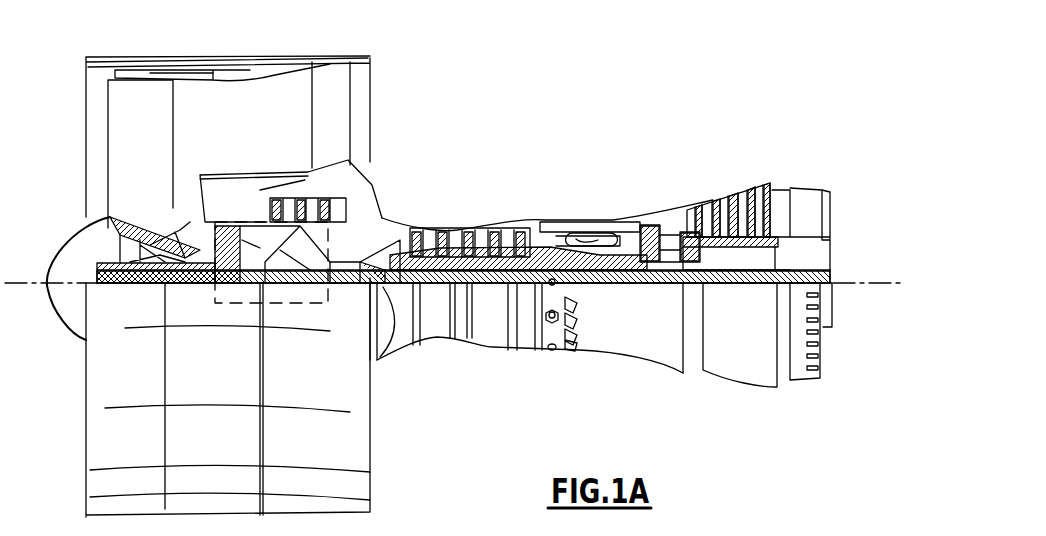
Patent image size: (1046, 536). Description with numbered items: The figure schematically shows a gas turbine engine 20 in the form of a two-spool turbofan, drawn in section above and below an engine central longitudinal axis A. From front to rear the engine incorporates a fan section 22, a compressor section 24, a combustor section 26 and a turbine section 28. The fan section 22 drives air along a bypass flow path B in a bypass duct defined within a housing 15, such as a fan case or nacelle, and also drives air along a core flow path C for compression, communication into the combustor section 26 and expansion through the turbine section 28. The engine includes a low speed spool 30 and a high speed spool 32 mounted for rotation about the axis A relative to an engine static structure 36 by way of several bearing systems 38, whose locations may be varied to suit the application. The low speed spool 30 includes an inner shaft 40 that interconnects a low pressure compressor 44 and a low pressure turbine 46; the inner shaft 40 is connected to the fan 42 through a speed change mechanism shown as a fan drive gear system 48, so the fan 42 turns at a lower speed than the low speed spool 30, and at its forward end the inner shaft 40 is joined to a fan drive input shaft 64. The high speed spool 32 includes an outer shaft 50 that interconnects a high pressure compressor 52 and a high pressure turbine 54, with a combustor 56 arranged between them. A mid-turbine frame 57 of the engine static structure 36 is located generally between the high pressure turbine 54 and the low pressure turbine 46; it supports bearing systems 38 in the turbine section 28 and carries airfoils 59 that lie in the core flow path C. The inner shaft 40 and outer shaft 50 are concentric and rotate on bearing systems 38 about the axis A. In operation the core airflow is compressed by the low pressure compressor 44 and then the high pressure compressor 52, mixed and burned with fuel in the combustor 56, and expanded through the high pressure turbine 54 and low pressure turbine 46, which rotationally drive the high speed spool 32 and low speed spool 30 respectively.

The gas turbine engine 20 is at (585, 100).
The fan section 22 is at (175, 52).
The housing 15 is at (228, 68).
The fan 42 is at (157, 162).
The low pressure compressor 44 is at (318, 200).
The compressor section 24 is at (412, 208).
The high pressure compressor 52 is at (478, 228).
The high speed spool 32 is at (530, 235).
The combustor section 26 is at (583, 205).
The combustor 56 is at (600, 238).
The high pressure turbine 54 is at (670, 240).
The mid-turbine frame 57 is at (668, 208).
The turbine section 28 is at (712, 160).
The low pressure turbine 46 is at (735, 200).
The airfoils 59 is at (690, 263).
The bearing systems 38 is at (330, 258).
The fan drive gear system 48 is at (207, 283).
The fan drive input shaft 64 is at (255, 283).
The inner shaft 40 is at (416, 348).
The low speed spool 30 is at (490, 291).
The engine static structure 36 is at (525, 348).
The outer shaft 50 is at (590, 284).
The engine central longitudinal axis A is at (893, 283).
The bypass flow path B is at (200, 120).
The core flow path C is at (228, 200).